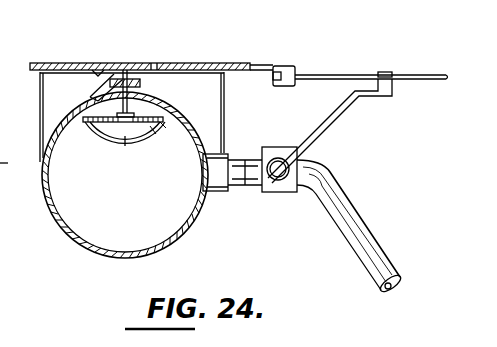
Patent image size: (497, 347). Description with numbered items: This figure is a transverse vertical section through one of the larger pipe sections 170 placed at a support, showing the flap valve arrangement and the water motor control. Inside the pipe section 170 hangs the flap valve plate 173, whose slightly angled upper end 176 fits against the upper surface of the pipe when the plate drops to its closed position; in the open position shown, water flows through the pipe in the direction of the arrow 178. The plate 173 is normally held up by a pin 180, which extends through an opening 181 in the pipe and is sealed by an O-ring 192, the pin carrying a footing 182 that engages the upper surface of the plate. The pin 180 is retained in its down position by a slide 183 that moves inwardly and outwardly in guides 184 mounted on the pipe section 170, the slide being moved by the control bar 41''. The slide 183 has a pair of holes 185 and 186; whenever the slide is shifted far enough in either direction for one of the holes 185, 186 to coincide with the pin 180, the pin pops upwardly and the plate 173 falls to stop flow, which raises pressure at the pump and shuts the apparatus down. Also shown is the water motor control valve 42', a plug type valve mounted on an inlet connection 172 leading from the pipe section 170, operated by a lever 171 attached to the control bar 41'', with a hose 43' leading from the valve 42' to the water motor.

The larger pipe section 170 is at (77, 238).
The lever 171 is at (323, 126).
The inlet connection 172 is at (240, 188).
The flap valve 173 is at (150, 124).
The upper end 176 is at (122, 152).
The arrow 178 is at (14, 178).
The pin 180 is at (97, 124).
The opening 181 is at (110, 86).
The footing 182 is at (135, 114).
The slide 183 is at (118, 72).
The guides 184 is at (58, 63).
The hole 185 is at (97, 65).
The hole 186 is at (150, 67).
The O-ring 192 is at (95, 75).
The control bar 41'' is at (349, 65).
The water motor control valve 42' is at (275, 155).
The hose 43' is at (350, 227).